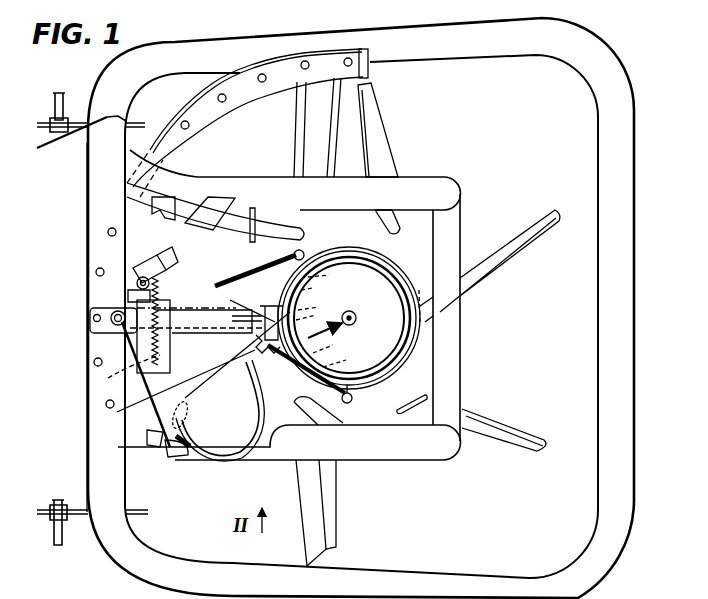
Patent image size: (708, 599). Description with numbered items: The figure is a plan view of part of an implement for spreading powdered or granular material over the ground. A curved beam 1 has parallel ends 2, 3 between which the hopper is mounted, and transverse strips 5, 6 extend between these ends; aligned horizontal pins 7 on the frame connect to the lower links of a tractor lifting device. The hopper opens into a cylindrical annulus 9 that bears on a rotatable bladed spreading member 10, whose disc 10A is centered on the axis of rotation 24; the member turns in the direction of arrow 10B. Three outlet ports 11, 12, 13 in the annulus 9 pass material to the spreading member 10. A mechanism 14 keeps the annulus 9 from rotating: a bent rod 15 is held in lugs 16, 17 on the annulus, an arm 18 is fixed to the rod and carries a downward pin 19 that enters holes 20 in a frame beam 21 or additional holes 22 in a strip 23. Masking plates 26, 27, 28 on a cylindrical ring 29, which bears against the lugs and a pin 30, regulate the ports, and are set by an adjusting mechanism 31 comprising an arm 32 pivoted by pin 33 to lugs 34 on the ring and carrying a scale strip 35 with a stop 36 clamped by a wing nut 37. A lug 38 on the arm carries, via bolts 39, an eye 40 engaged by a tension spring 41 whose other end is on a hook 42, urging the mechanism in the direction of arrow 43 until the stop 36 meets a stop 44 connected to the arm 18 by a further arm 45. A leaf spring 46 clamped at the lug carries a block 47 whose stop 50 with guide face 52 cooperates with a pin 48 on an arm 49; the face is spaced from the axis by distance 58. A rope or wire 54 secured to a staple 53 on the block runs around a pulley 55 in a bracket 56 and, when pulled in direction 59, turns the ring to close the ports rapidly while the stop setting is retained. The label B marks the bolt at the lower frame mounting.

The curved beam 1 is at (525, 50).
The end of beam 2 is at (405, 177).
The end of beam 3 is at (392, 458).
The transverse strip 5 is at (452, 227).
The transverse strip 6 is at (256, 210).
The horizontal pin 7 is at (60, 112).
The cylindrical annulus 9 is at (352, 256).
The rotatable bladed spreading member 10 is at (470, 318).
The disc 10A is at (378, 265).
The arrow indicating direction of rotation 10B is at (474, 525).
The outlet port 11 is at (349, 318).
The outlet port 12 is at (320, 320).
The outlet port 13 is at (333, 344).
The mechanism 14 is at (90, 330).
The bent rod 15 is at (215, 287).
The lug 16 is at (303, 257).
The lug 17 is at (352, 398).
The arm 18 is at (188, 308).
The pin 19 is at (92, 318).
The holes 20 is at (106, 404).
The frame beam 21 is at (86, 213).
The additional holes 22 is at (223, 103).
The strip 23 is at (280, 82).
The axis of rotation 24 is at (358, 325).
The masking plate 26 is at (314, 291).
The masking plate 27 is at (309, 325).
The masking plate 28 is at (341, 363).
The cylindrical ring 29 is at (398, 368).
The pin 30 is at (420, 294).
The adjusting mechanism 31 is at (150, 260).
The arm 32 is at (165, 345).
The horizontal pivot pin 33 is at (270, 305).
The lugs 34 is at (266, 308).
The strip or plate 35 is at (170, 275).
The stop 36 is at (133, 277).
The wing nut 37 is at (143, 276).
The lug 38 is at (250, 328).
The bolts 39 is at (252, 316).
The eye 40 is at (265, 345).
The tension spring 41 is at (246, 372).
The hook 42 is at (280, 368).
The arrow 43 is at (178, 310).
The stop 44 is at (128, 295).
The arm 45 is at (158, 268).
The leaf spring 46 is at (250, 425).
The block 47 is at (188, 462).
The pin 48 is at (125, 373).
The arm 49 is at (110, 378).
The stop 50 is at (180, 412).
The guide face 52 is at (150, 430).
The staple 53 is at (165, 452).
The rope or wire 54 is at (158, 393).
The pulley 55 is at (93, 332).
The bracket 56 is at (118, 326).
The distance 58 is at (349, 314).
The arrow 59 is at (58, 162).
The bolt B is at (55, 525).